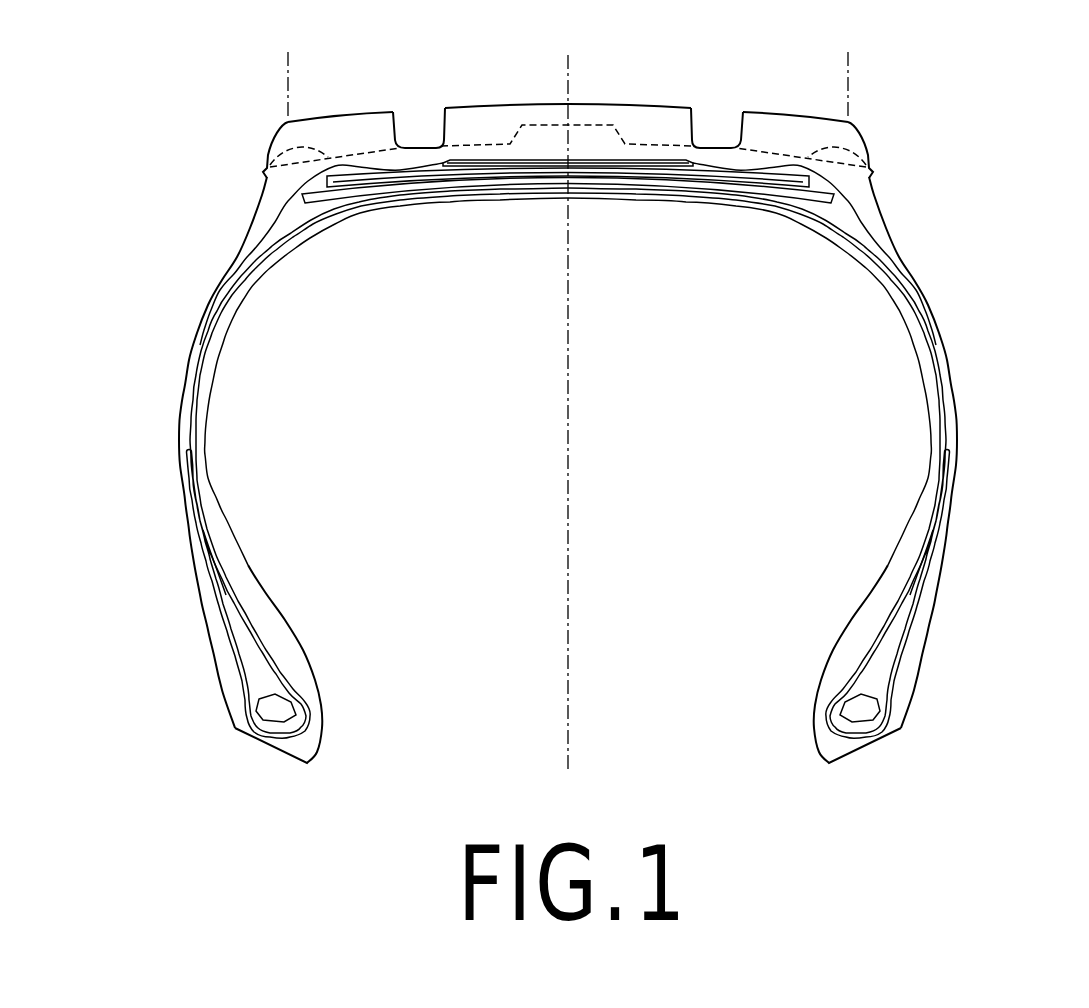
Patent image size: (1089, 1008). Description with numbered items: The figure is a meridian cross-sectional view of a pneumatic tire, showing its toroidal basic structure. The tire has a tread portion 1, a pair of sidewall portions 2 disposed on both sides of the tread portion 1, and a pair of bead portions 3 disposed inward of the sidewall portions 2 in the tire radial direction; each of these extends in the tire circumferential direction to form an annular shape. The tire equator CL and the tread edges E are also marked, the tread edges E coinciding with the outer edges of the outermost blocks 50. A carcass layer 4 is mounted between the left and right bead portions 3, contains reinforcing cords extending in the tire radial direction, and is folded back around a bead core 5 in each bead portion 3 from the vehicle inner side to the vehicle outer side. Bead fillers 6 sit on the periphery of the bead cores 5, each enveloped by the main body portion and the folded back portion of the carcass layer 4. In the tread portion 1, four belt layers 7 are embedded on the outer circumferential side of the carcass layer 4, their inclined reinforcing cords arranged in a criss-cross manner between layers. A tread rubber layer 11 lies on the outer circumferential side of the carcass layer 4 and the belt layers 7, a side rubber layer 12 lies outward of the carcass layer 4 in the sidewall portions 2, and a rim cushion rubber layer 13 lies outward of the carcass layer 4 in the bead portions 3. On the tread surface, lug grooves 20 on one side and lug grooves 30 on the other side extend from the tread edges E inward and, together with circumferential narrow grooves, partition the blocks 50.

The tread portion 1 is at (569, 387).
The sidewall portions 2 is at (569, 452).
The bead portions 3 is at (570, 647).
The carcass layer 4 is at (863, 255).
The bead core 5 is at (281, 712).
The bead fillers 6 is at (256, 648).
The belt layers 7 is at (627, 162).
The tread rubber layer 11 is at (574, 202).
The side rubber layer 12 is at (188, 507).
The rim cushion rubber layer 13 is at (250, 728).
The lug grooves 20 is at (550, 122).
The lug grooves 30 is at (270, 152).
The blocks 50 is at (323, 117).